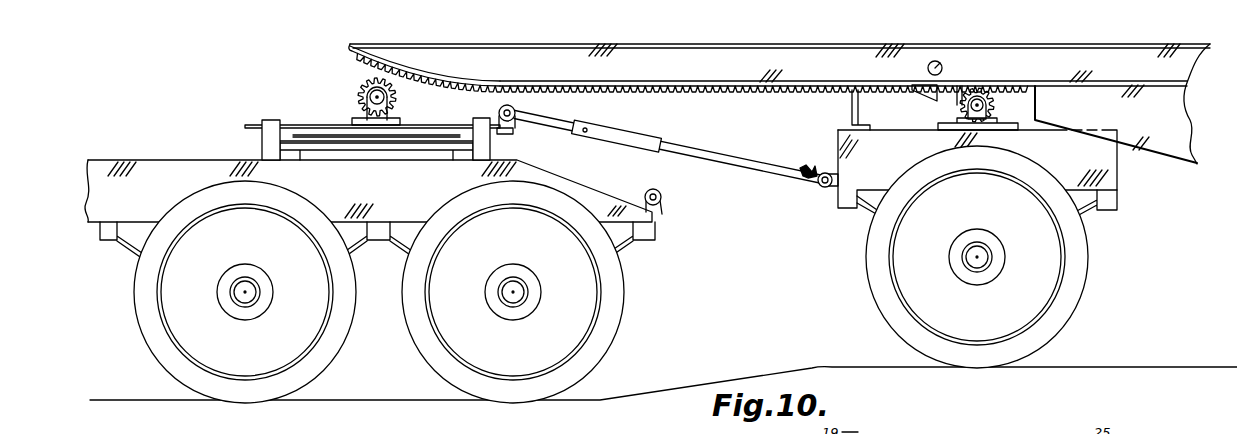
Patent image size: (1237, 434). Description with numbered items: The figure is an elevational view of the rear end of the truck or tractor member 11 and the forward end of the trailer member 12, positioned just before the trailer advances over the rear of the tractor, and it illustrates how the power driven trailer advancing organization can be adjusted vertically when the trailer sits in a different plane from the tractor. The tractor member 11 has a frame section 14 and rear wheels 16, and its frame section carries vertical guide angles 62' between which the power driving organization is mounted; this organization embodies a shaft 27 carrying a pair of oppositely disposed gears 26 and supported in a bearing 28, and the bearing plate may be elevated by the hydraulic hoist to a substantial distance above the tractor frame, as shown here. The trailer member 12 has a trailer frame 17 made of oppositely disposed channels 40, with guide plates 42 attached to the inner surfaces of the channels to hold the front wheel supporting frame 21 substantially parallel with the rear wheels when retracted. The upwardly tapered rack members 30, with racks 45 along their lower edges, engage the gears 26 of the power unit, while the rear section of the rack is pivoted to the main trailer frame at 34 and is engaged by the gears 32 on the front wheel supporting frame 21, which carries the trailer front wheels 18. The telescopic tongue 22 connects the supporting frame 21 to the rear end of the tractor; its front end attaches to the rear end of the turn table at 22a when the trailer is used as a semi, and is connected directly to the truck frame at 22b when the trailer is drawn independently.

The truck or tractor member 11 is at (640, 318).
The trailer member 12 is at (846, 299).
The frame section 14 is at (100, 172).
The rear wheels 16 is at (190, 358).
The trailer frame 17 is at (1185, 65).
The front wheels 18 is at (1048, 281).
The front wheel supporting frame 21 is at (1134, 184).
The tongue 22 is at (730, 142).
The tongue attachment to turn table 22a is at (516, 110).
The tongue attachment to truck frame 22b is at (661, 197).
The gears 26 is at (398, 97).
The shaft 27 is at (370, 99).
The bearing 28 is at (363, 114).
The rack members 30 is at (344, 77).
The gears 32 is at (957, 109).
The pivot 34 is at (940, 61).
The channels 40 is at (1147, 50).
The guide plates 42 is at (1193, 168).
The racks 45 is at (626, 94).
The vertical guide angles 62' is at (379, 139).